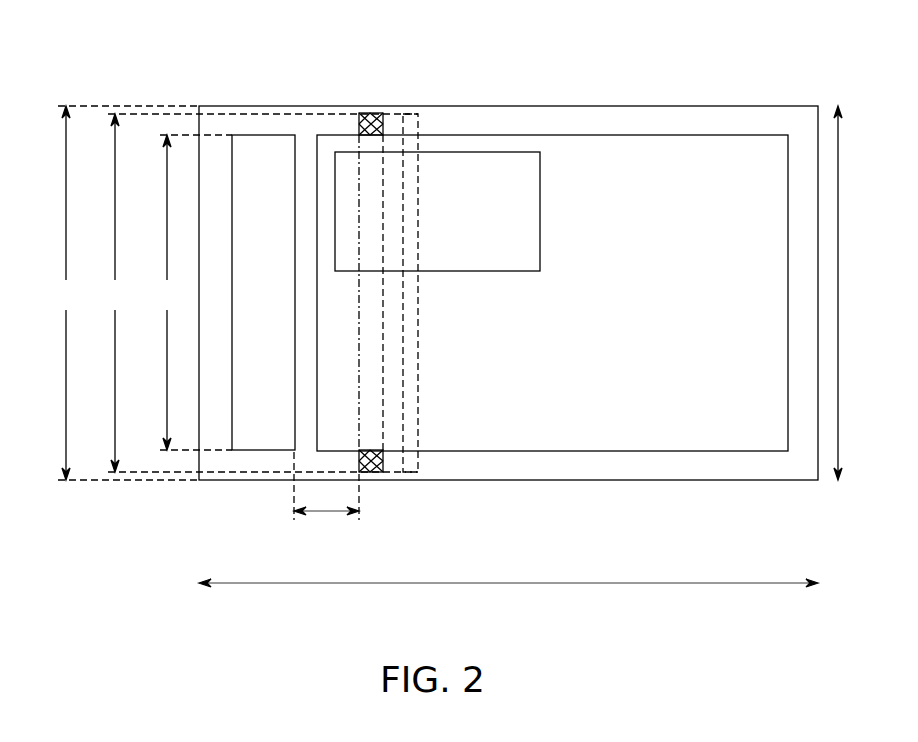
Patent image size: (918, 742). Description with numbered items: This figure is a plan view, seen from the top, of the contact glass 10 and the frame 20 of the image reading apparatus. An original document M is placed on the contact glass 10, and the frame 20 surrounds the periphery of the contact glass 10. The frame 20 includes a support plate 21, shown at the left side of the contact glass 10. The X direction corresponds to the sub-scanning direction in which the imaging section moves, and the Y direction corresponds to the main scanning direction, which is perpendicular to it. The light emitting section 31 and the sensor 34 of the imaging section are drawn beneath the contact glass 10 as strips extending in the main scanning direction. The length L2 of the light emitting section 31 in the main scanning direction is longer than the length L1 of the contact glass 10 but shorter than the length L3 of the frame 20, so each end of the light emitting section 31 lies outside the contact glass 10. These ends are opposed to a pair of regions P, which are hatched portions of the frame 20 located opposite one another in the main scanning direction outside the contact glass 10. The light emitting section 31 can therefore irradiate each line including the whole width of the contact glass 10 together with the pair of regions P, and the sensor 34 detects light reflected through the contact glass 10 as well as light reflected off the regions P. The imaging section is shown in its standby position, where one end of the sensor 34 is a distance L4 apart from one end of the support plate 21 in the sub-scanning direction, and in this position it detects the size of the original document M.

The contact glass 10 is at (672, 163).
The frame 20 is at (720, 462).
The support plate 21 is at (310, 403).
The light emitting section 31 is at (414, 114).
The sensor 34 is at (392, 124).
The original document M is at (492, 150).
The regions P is at (368, 118).
The length of the contact glass L1 is at (183, 292).
The length of the light emitting section L2 is at (252, 293).
The length of the frame L3 is at (117, 293).
The distance L4 is at (326, 498).
The X direction X is at (508, 597).
The Y direction Y is at (846, 293).